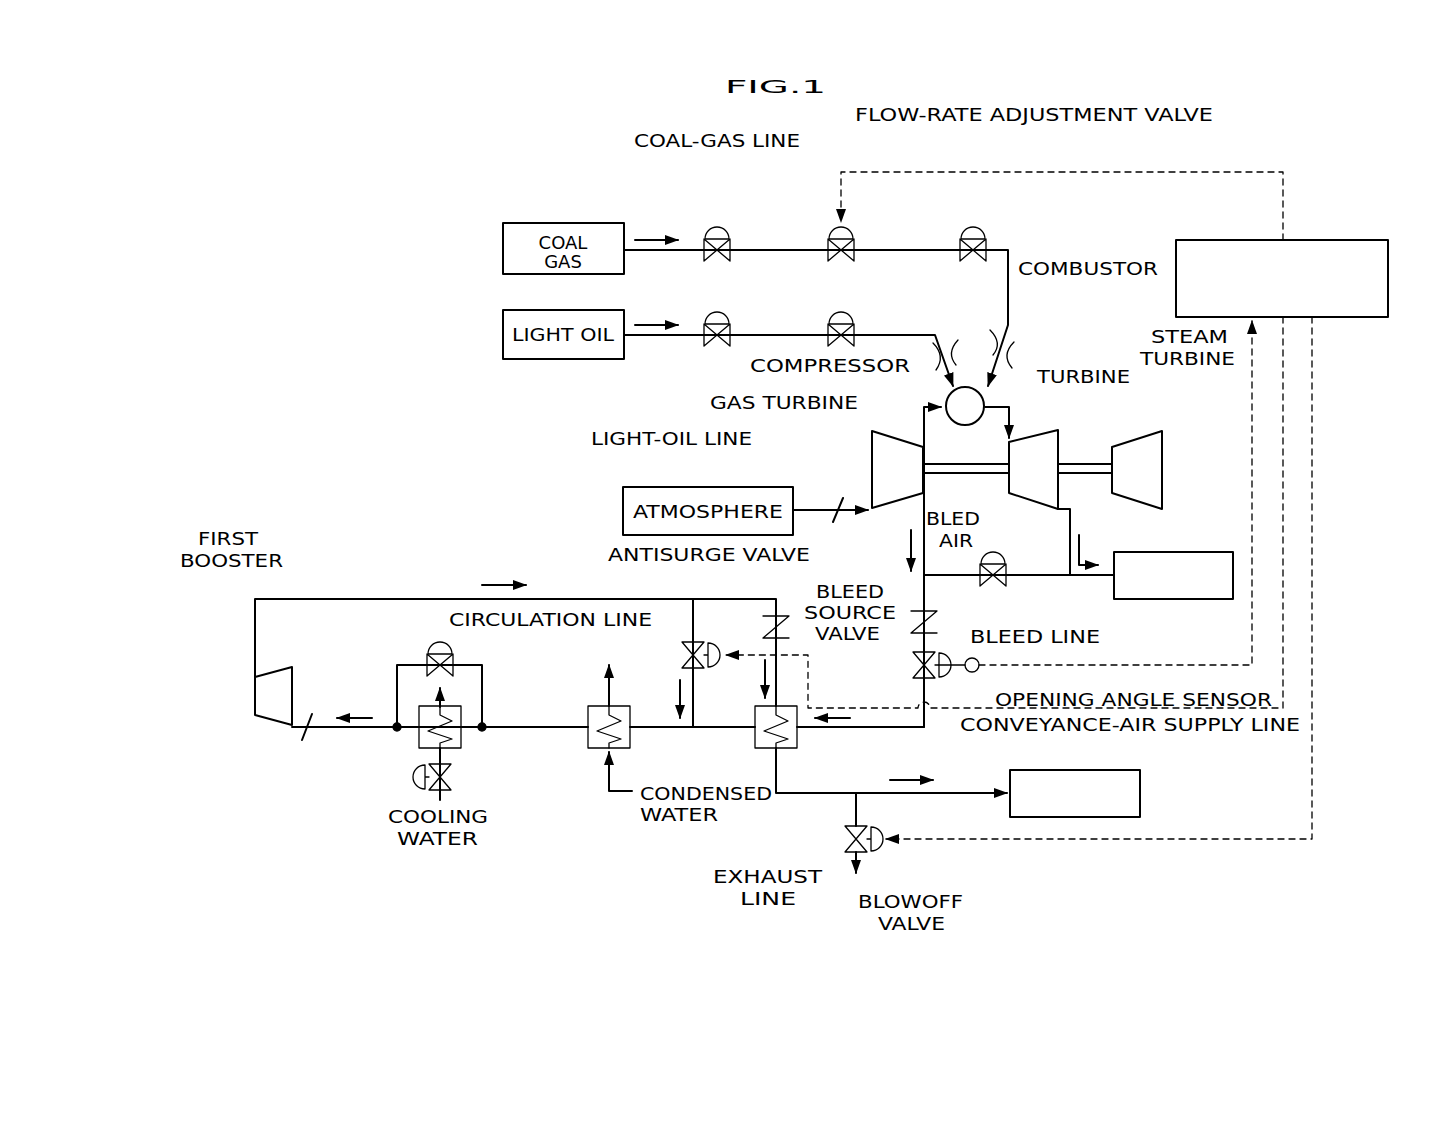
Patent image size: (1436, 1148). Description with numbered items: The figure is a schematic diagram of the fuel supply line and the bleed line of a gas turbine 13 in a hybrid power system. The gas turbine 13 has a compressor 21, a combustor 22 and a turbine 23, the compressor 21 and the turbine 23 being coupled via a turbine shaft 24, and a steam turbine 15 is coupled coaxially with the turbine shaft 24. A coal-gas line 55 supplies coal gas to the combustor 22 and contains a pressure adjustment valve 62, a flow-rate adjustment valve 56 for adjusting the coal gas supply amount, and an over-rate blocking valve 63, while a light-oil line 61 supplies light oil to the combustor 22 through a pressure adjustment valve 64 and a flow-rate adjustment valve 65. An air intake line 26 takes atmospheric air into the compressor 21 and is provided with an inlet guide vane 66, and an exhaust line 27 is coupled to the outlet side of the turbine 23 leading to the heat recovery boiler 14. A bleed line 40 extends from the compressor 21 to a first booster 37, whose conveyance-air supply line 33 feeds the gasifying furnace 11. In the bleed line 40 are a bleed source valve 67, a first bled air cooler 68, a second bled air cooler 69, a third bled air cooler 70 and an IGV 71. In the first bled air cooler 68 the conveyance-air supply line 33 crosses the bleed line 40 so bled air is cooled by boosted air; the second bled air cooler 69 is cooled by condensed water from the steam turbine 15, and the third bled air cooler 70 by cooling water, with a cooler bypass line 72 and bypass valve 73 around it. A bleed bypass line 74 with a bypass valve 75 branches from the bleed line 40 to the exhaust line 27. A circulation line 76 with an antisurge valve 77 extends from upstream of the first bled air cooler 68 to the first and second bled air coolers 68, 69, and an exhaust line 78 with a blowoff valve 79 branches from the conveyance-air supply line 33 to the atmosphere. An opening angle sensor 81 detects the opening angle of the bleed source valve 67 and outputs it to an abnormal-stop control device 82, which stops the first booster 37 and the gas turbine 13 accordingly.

The gasifying furnace 11 is at (1142, 794).
The gas turbine 13 is at (943, 476).
The heat recovery boiler 14 is at (1172, 600).
The steam turbine 15 is at (1171, 426).
The compressor 21 is at (903, 441).
The combustor 22 is at (990, 395).
The turbine 23 is at (1062, 431).
The turbine shaft 24 is at (992, 465).
The air intake line 26 is at (809, 508).
The exhaust line 27 is at (1072, 521).
The conveyance-air supply line 33 is at (945, 791).
The first booster 37 is at (255, 686).
The bleed line 40 is at (928, 604).
The coal-gas line 55 is at (752, 246).
The flow-rate adjustment valve 56 is at (829, 224).
The light-oil line 61 is at (747, 338).
The pressure adjustment valve 62 is at (716, 227).
The over-rate blocking valve 63 is at (979, 227).
The pressure adjustment valve 64 is at (712, 318).
The flow-rate adjustment valve 65 is at (845, 318).
The inlet guide vane 66 is at (836, 523).
The bleed source valve 67 is at (913, 643).
The first bled air cooler 68 is at (766, 750).
The second bled air cooler 69 is at (592, 751).
The third bled air cooler 70 is at (420, 753).
The IGV 71 is at (302, 742).
The cooler bypass line 72 is at (484, 690).
The bypass valve 73 is at (438, 646).
The bleed bypass line 74 is at (1042, 573).
The bypass valve 75 is at (1001, 552).
The circulation line 76 is at (687, 615).
The antisurge valve 77 is at (706, 641).
The exhaust line 78 is at (855, 802).
The blowoff valve 79 is at (883, 846).
The opening angle sensor 81 is at (979, 668).
The abnormal-stop control device 82 is at (1246, 240).